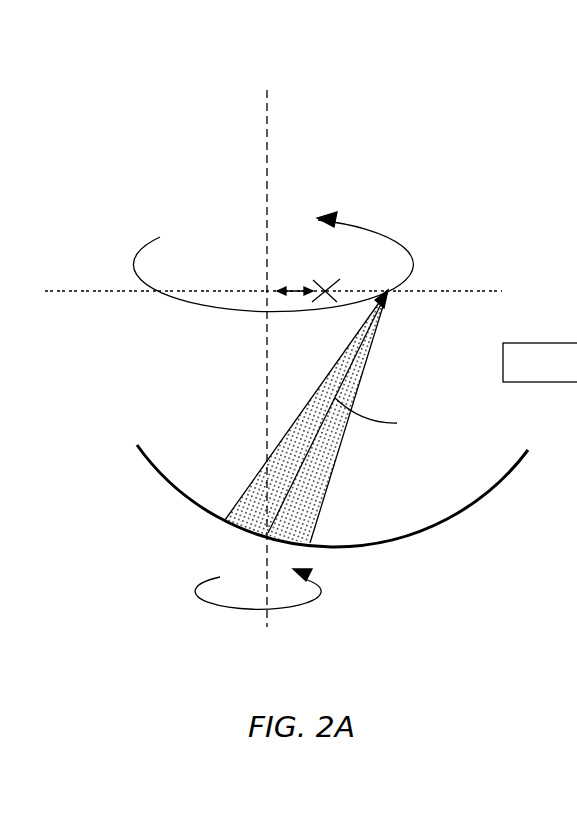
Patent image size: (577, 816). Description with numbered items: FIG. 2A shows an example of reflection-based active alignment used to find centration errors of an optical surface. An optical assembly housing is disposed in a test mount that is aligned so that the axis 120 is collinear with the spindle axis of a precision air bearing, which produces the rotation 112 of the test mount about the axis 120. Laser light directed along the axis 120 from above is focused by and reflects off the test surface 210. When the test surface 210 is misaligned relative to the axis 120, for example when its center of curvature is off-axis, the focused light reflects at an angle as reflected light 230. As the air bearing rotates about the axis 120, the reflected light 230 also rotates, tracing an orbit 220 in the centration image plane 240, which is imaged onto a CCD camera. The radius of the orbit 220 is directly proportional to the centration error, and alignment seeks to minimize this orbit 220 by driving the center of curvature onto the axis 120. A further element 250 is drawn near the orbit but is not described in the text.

The axis 120 is at (268, 113).
The orbit 220 is at (370, 232).
The mirror element 250 is at (300, 287).
The second image plane 240 is at (463, 288).
The test surface 210 is at (172, 488).
The reflected light 230 is at (315, 478).
The rotation 112 is at (228, 608).